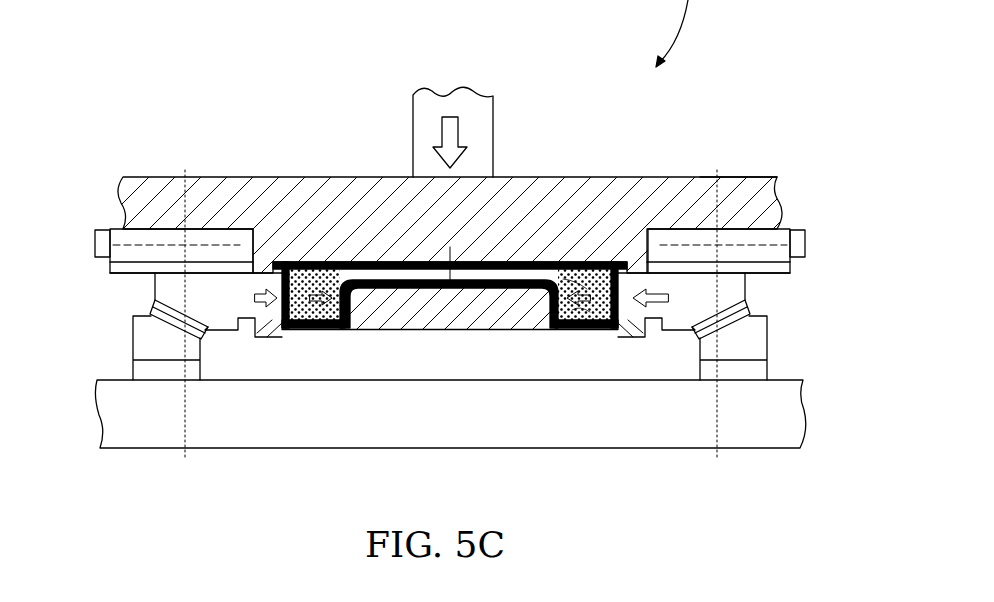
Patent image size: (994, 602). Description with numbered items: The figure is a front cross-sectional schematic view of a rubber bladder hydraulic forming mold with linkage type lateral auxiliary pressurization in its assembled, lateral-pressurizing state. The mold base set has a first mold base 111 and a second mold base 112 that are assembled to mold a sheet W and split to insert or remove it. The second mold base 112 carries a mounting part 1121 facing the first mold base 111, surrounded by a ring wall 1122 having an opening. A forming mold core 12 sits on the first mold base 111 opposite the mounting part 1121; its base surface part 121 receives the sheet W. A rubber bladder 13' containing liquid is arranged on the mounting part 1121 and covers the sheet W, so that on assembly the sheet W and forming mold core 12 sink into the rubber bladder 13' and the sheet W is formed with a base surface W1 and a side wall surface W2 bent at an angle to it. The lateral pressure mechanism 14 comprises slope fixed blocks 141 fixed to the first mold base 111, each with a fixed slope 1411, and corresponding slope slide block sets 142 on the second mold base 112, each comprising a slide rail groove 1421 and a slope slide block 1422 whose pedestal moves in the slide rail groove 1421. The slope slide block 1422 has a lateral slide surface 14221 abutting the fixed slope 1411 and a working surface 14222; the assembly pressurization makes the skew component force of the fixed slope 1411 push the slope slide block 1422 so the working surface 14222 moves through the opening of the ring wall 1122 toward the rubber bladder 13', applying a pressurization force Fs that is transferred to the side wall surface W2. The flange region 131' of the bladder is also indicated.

The forming mold core 12 is at (447, 262).
The second mold base 112 is at (755, 176).
The mounting part 1121 is at (308, 313).
The ring wall 1122 is at (281, 337).
The base surface part 121 is at (472, 330).
The first mold base 111 is at (790, 379).
The rubber bladder 13' is at (450, 314).
The holder flange 131' is at (450, 343).
The lateral pressure mechanism 14 is at (429, 316).
The slope fixed block 141 is at (135, 353).
The slope slide block set 142 is at (157, 252).
The fixed slope 1411 is at (697, 320).
The slide rail groove 1421 is at (772, 238).
The slope slide block 1422 is at (755, 268).
The lateral slide surface 14221 is at (725, 329).
The working surface 14222 is at (288, 335).
The sheet W is at (393, 330).
The base surface W1 is at (431, 330).
The side wall surface W2 is at (340, 315).
The pressurization force Fs is at (458, 297).